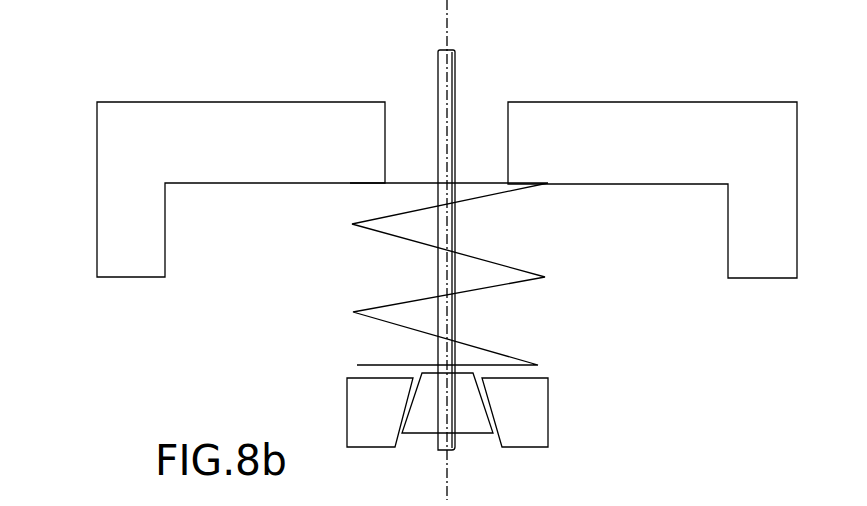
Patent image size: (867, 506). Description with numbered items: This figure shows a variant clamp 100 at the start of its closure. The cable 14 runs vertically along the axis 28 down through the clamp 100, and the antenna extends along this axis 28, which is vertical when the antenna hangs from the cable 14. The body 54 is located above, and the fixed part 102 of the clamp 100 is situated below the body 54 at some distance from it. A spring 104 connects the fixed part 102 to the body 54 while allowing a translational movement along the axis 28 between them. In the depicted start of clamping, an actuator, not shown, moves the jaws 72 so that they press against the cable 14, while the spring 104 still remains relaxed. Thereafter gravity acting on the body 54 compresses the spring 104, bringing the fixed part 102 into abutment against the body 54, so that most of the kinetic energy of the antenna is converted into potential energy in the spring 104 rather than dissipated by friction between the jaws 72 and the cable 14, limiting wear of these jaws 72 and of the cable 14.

The cable 14 is at (456, 80).
The axis 28 is at (447, 38).
The body 54 is at (120, 207).
The jaws 72 is at (425, 418).
The clamp 100 is at (645, 362).
The fixed part 102 is at (363, 398).
The spring 104 is at (480, 257).